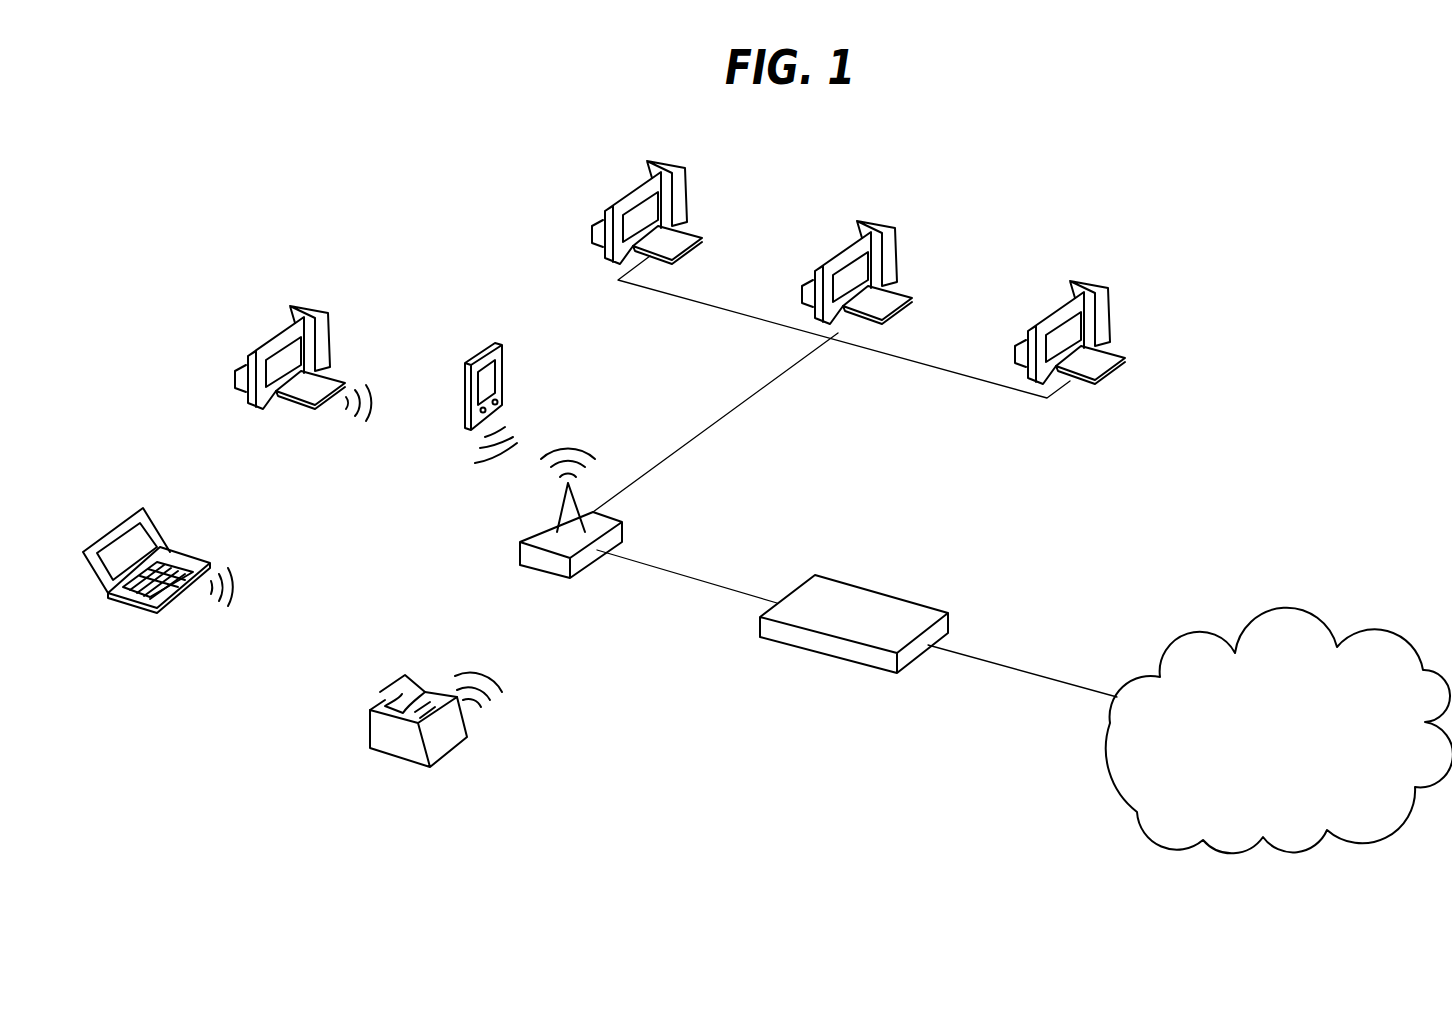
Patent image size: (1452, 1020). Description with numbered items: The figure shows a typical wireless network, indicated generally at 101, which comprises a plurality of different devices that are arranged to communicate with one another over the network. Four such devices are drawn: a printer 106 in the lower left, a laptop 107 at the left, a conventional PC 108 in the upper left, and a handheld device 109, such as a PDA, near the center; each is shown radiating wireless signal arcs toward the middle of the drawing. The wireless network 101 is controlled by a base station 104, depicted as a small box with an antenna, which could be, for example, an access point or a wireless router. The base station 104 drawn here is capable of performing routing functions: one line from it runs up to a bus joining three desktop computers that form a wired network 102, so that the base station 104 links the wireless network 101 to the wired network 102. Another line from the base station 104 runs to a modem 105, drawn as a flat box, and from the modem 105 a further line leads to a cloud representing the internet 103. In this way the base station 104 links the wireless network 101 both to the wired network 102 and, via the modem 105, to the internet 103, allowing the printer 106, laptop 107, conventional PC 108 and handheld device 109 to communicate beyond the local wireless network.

The wireless network 101 is at (308, 783).
The wired network 102 is at (968, 220).
The internet 103 is at (1280, 607).
The base station 104 is at (570, 590).
The modem 105 is at (827, 655).
The printer 106 is at (423, 772).
The laptop 107 is at (117, 517).
The conventional PC 108 is at (300, 290).
The handheld device 109 is at (492, 335).